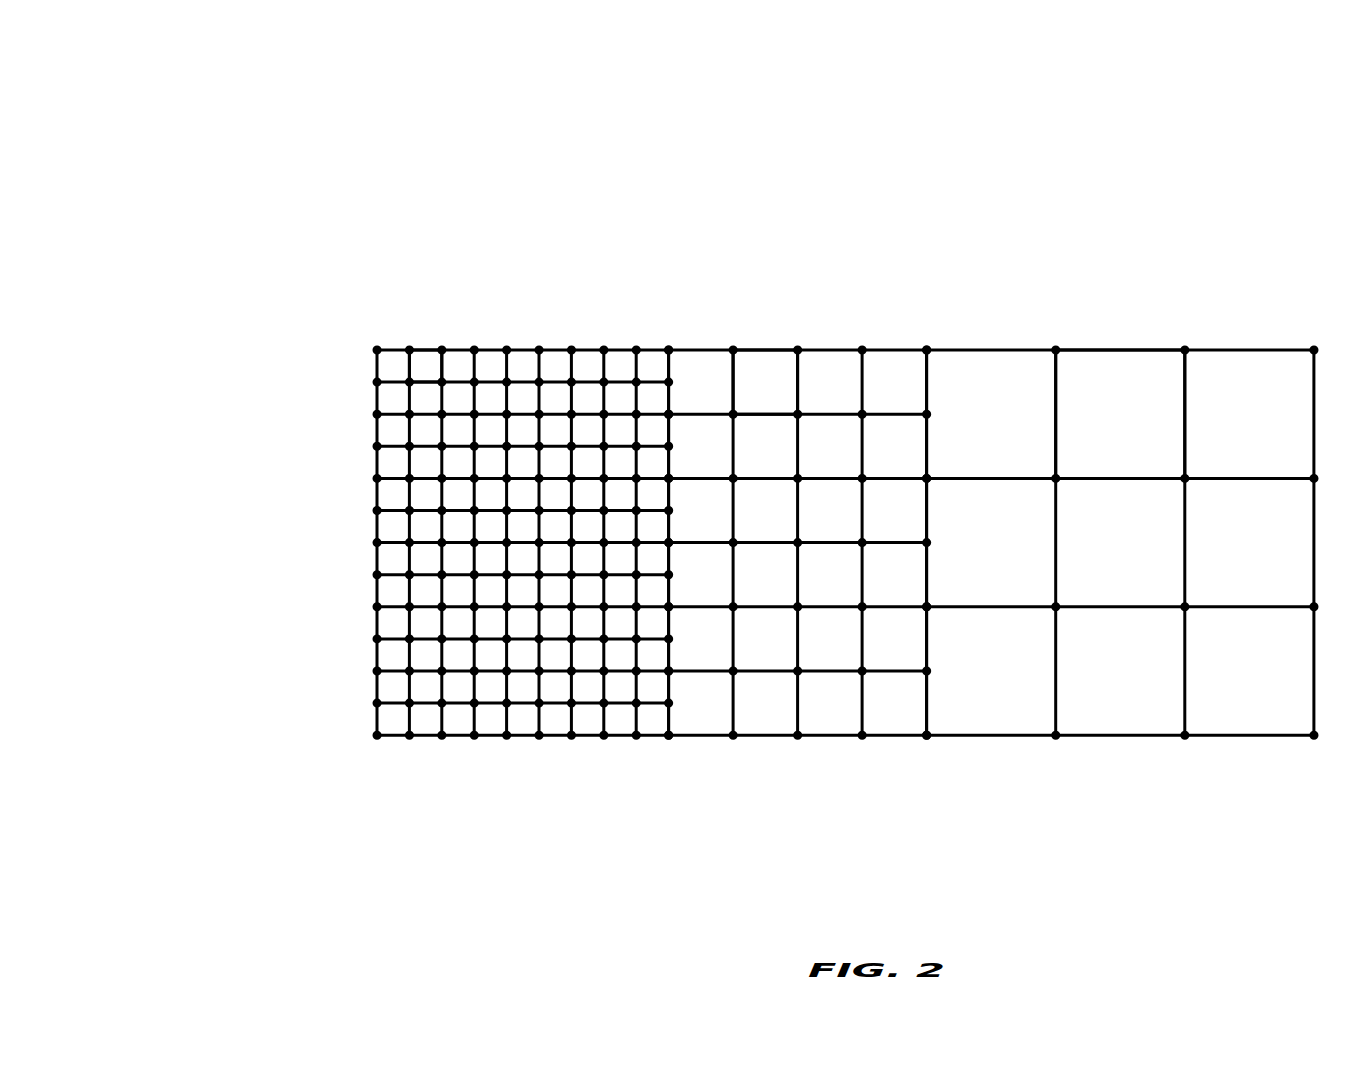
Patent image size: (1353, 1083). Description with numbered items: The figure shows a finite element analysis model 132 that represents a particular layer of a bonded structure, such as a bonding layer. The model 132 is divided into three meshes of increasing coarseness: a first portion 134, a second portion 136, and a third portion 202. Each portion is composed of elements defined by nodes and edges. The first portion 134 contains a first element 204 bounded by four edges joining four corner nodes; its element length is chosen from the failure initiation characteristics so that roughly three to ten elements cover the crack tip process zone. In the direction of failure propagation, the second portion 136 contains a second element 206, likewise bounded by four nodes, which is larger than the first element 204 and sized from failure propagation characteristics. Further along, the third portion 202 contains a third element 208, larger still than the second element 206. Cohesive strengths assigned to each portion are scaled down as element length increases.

The finite element analysis model 132 is at (217, 145).
The first portion 134 is at (558, 292).
The second portion 136 is at (820, 292).
The third portion 202 is at (1157, 293).
The first element 204 is at (427, 368).
The second element 206 is at (767, 383).
The third element 208 is at (1100, 408).